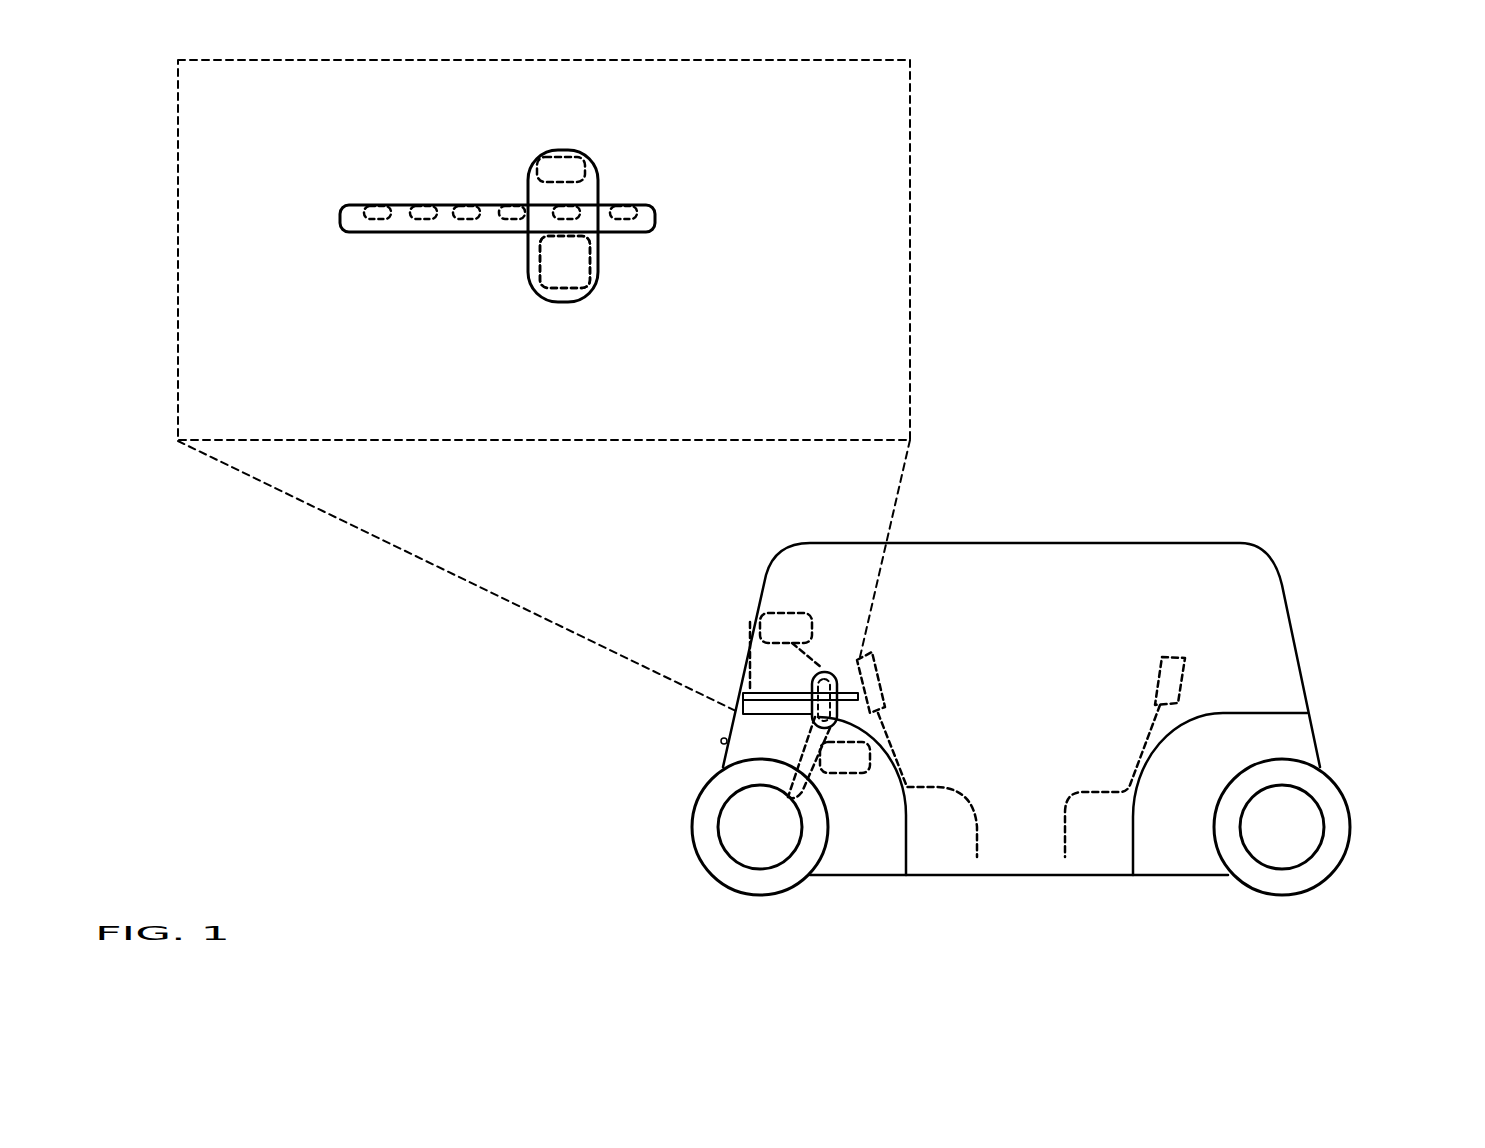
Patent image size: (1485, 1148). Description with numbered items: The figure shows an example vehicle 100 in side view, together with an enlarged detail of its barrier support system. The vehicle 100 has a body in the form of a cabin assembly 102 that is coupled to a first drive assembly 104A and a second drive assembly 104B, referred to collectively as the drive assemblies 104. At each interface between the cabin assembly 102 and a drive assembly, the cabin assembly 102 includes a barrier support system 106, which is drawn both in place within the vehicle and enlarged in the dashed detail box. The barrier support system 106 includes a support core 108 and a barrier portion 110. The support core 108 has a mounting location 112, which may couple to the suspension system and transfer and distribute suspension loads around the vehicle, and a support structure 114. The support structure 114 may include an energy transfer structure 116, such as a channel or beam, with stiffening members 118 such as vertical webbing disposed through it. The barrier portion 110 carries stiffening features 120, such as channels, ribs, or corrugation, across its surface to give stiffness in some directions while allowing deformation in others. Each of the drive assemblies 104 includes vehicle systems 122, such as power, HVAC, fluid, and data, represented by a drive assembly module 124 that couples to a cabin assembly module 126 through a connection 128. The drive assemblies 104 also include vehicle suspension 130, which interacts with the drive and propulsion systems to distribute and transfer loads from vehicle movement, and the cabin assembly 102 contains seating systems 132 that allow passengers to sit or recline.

The vehicle 100 is at (1270, 383).
The cabin assembly 102 is at (1080, 543).
The drive assemblies 104 is at (1027, 851).
The first drive assembly 104A is at (679, 857).
The second drive assembly 104B is at (1364, 842).
The barrier support system 106 is at (578, 430).
The support core 108 is at (559, 248).
The barrier portion 110 is at (453, 213).
The mounting location 112 is at (550, 162).
The support structure 114 is at (580, 300).
The energy transfer structure 116 is at (590, 283).
The stiffening members 118 is at (578, 252).
The stiffening features 120 is at (370, 210).
The vehicle systems 122 is at (868, 900).
The drive assembly module 124 is at (833, 763).
The cabin assembly module 126 is at (762, 628).
The connection 128 is at (818, 663).
The vehicle suspension 130 is at (803, 753).
The seating systems 132 is at (938, 792).